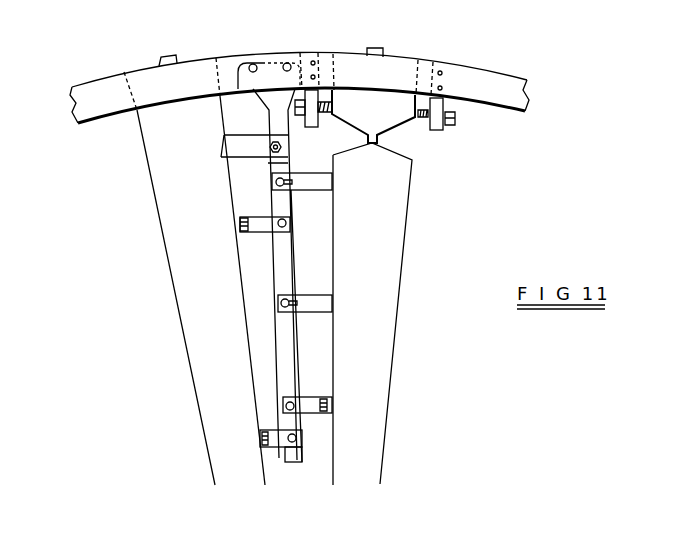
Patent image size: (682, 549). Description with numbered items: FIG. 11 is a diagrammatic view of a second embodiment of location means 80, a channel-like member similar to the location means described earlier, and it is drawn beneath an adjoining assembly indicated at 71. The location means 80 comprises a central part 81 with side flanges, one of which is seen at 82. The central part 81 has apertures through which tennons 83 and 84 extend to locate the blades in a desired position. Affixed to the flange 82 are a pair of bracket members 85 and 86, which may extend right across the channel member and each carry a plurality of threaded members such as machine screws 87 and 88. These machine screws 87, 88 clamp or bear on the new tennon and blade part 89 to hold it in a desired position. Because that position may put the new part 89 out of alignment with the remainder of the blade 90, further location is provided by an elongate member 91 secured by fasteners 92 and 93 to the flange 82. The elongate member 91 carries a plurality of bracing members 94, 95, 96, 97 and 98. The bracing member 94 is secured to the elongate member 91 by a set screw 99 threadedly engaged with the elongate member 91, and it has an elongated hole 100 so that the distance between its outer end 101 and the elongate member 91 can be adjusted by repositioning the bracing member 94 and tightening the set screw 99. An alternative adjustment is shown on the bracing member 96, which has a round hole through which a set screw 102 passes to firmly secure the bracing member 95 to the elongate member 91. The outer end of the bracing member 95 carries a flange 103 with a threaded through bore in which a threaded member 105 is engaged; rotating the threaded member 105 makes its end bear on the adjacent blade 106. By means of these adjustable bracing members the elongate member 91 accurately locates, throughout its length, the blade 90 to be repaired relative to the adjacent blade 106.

The assembly 71 is at (383, 0).
The location means 80 is at (118, 73).
The central part 81 is at (500, 69).
The flange 82 is at (496, 100).
The tennon 83 is at (176, 58).
The tennon 84 is at (386, 50).
The bracket member 85 is at (312, 128).
The bracket member 86 is at (437, 130).
The machine screw 87 is at (327, 113).
The machine screw 88 is at (420, 130).
The new tennon and blade part 89 is at (400, 130).
The blade 90 is at (383, 292).
The elongate member 91 is at (287, 375).
The fastener 92 is at (255, 63).
The fastener 93 is at (290, 63).
The bracing member 94 is at (247, 157).
The bracing member 95 is at (312, 185).
The bracing member 96 is at (262, 228).
The bracing member 97 is at (307, 312).
The bracing member 98 is at (317, 395).
The set screw 99 is at (283, 143).
The elongated hole 100 is at (270, 147).
The outer end 101 is at (240, 148).
The set screw 102 is at (290, 225).
The flange 103 is at (240, 230).
The threaded member 105 is at (242, 218).
The blade 106 is at (217, 398).